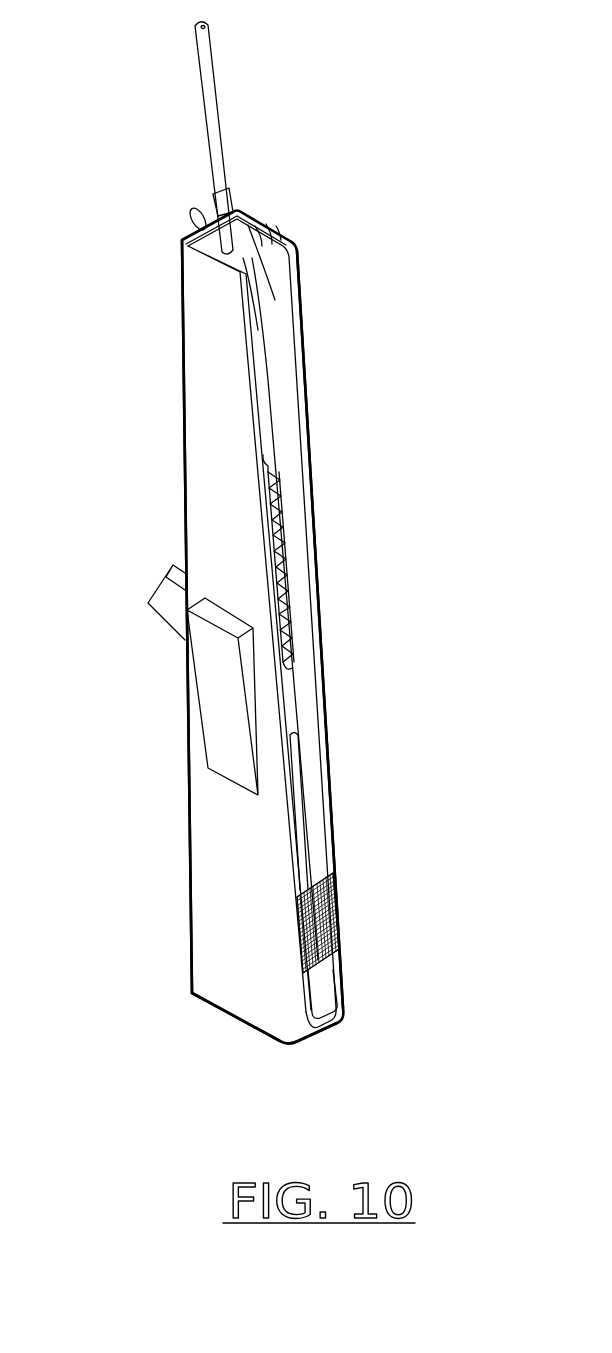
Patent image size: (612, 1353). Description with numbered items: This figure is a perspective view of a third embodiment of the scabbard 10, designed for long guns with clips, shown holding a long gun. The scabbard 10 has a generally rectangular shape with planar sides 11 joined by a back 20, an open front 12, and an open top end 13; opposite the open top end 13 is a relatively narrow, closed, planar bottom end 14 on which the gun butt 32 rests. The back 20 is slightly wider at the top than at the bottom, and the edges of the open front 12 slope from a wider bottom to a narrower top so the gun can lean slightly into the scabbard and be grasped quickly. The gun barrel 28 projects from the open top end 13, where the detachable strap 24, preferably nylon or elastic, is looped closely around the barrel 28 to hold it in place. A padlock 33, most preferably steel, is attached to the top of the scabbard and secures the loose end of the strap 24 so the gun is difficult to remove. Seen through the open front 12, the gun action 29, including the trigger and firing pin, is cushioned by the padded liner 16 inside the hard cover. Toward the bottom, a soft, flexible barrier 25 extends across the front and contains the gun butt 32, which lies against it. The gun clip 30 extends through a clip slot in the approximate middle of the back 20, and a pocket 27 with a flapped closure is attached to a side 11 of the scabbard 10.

The scabbard 10 is at (180, 262).
The planar side 11 is at (205, 370).
The open front 12 is at (278, 310).
The open top end 13 is at (268, 228).
The bottom end 14 is at (310, 1030).
The padded liner 16 is at (302, 428).
The back 20 is at (183, 490).
The detachable strap 24 is at (218, 210).
The barrier 25 is at (340, 903).
The pocket 27 is at (225, 723).
The gun barrel 28 is at (217, 90).
The gun action 29 is at (290, 632).
The gun clip 30 is at (167, 608).
The gun butt 32 is at (323, 997).
The padlock 33 is at (193, 208).